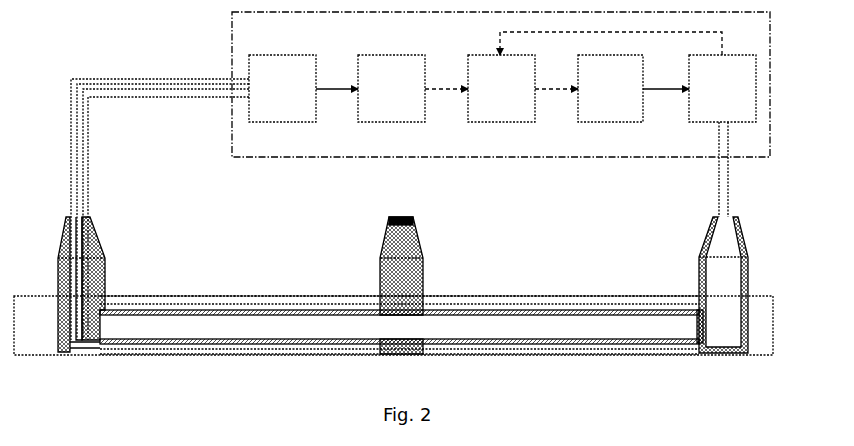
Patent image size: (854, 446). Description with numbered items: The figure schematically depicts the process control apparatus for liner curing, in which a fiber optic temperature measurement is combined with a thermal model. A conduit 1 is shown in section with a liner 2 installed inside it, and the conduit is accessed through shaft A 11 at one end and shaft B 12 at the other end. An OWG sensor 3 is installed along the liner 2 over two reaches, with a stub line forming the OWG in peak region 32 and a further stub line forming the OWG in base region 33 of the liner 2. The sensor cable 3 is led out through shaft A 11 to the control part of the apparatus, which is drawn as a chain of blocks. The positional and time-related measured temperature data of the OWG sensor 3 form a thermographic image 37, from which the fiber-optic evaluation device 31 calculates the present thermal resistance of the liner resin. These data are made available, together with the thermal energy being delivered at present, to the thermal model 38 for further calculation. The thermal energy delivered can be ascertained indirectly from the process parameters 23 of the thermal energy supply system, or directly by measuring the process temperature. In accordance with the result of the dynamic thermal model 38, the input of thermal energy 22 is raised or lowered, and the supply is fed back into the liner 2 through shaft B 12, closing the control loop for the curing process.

The conduit 1 is at (765, 316).
The liner 2 is at (571, 327).
The OWG sensor 3 is at (138, 79).
The shaft A 11 is at (60, 259).
The shaft B 12 is at (726, 220).
The input of thermal energy 22 is at (610, 88).
The process parameters 23 is at (722, 88).
The fiber-optic evaluation device 31 is at (282, 88).
The OWG in peak region 32 is at (235, 306).
The OWG in base region 33 is at (475, 346).
The thermographic image 37 is at (391, 88).
The thermal model 38 is at (501, 88).